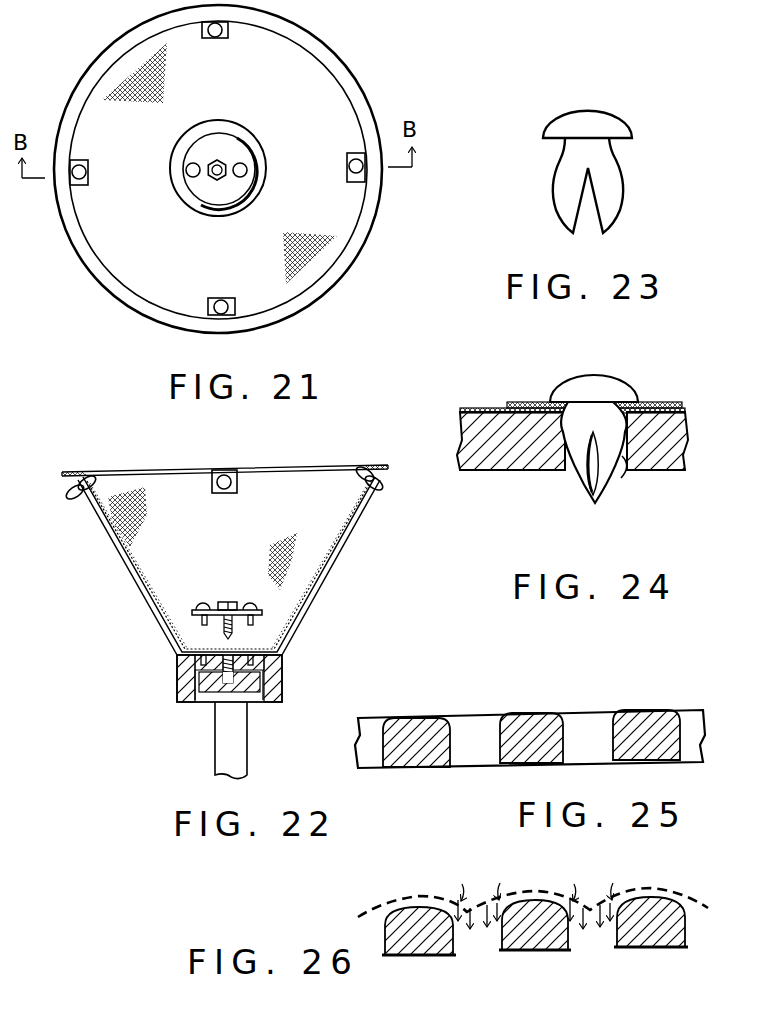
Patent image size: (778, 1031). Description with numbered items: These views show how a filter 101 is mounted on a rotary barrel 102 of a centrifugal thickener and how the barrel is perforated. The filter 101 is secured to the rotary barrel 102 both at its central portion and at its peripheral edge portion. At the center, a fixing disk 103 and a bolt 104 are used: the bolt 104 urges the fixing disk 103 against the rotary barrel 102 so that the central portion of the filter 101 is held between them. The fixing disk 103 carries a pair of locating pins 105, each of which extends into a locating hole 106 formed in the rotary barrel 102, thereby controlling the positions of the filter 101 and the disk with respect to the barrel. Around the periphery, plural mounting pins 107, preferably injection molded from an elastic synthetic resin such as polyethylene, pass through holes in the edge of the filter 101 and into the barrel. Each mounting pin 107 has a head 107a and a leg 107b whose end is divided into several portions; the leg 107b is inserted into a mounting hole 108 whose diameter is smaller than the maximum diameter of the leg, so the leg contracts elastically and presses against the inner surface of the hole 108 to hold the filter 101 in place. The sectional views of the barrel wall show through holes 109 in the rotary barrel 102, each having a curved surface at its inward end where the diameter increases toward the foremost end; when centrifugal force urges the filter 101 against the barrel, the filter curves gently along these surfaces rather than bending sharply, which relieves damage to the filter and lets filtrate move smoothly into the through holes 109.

In FIG. 21, the filter 101 is at (110, 86).
In FIG. 22, the filter 101 is at (282, 563).
In FIG. 24, the filter 101 is at (495, 385).
In FIG. 26, the filter 101 is at (435, 900).
In FIG. 21, the rotary barrel 102 is at (337, 268).
In FIG. 22, the rotary barrel 102 is at (342, 545).
In FIG. 24, the rotary barrel 102 is at (508, 460).
In FIG. 25, the rotary barrel 102 is at (530, 743).
In FIG. 26, the rotary barrel 102 is at (534, 934).
In FIG. 21, the fixing disk 103 is at (223, 147).
In FIG. 22, the fixing disk 103 is at (187, 612).
In FIG. 21, the bolt 104 is at (218, 178).
In FIG. 22, the bolt 104 is at (226, 600).
In FIG. 21, the locating pins 105 is at (245, 168).
In FIG. 22, the locating pins 105 is at (257, 624).
In FIG. 22, the locating hole 106 is at (264, 663).
In FIG. 21, the mounting pin 107 is at (223, 38).
In FIG. 22, the mounting pin 107 is at (88, 480).
In FIG. 23, the mounting pin 107 is at (583, 159).
In FIG. 24, the mounting pin 107 is at (623, 438).
In FIG. 23, the head 107a is at (607, 122).
In FIG. 24, the head 107a is at (590, 380).
In FIG. 23, the leg 107b is at (567, 215).
In FIG. 24, the leg 107b is at (580, 493).
In FIG. 24, the mounting hole 108 is at (622, 478).
In FIG. 25, the through holes 109 is at (468, 760).
In FIG. 26, the through holes 109 is at (483, 938).